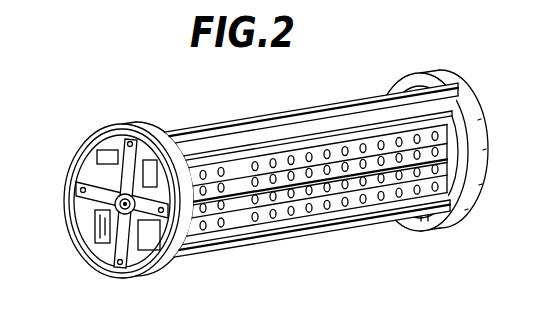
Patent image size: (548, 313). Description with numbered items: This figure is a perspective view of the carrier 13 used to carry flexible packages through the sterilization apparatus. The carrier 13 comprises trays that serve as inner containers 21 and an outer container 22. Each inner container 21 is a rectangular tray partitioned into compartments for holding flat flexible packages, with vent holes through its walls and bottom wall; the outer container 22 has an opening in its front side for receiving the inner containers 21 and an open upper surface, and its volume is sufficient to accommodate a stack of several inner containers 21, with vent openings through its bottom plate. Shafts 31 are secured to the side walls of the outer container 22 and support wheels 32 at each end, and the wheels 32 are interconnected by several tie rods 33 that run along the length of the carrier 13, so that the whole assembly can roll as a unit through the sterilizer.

The carrier 13 is at (342, 94).
The inner container 21 is at (241, 222).
The outer container 22 is at (103, 240).
The shaft 31 is at (118, 206).
The wheel 32 is at (126, 176).
The tie rod 33 is at (247, 118).